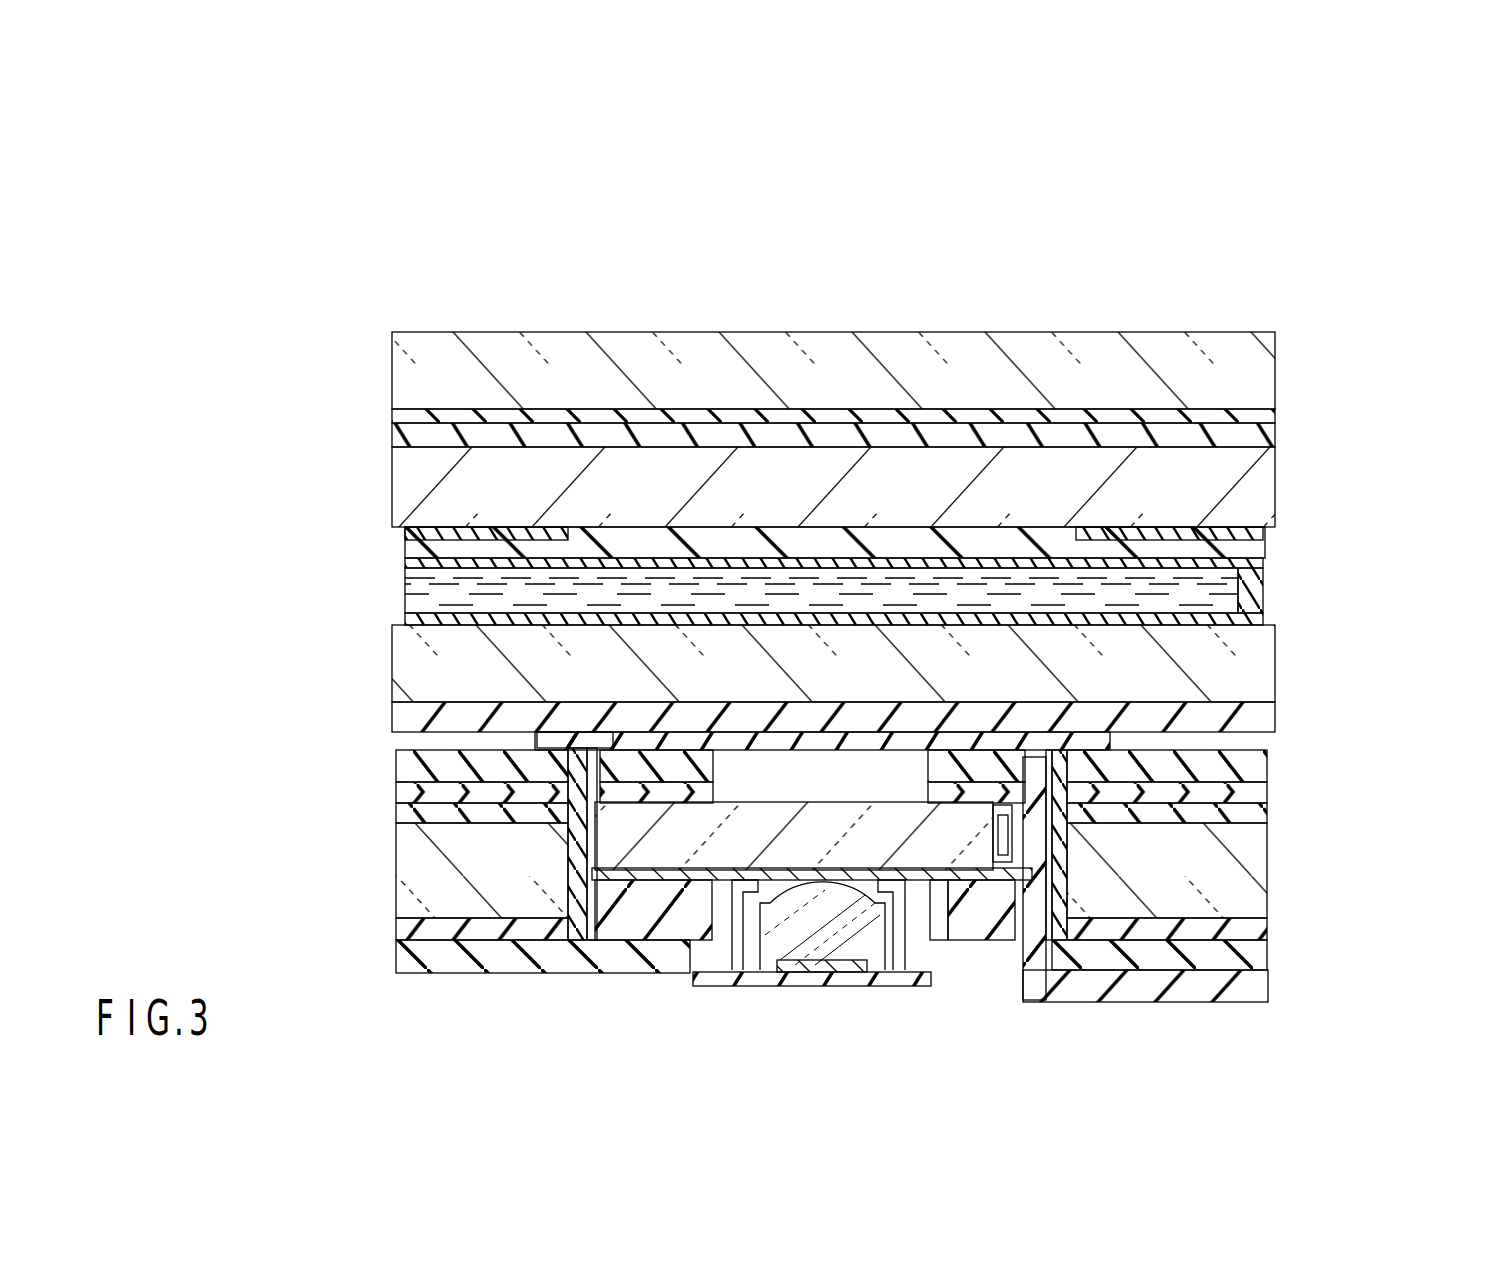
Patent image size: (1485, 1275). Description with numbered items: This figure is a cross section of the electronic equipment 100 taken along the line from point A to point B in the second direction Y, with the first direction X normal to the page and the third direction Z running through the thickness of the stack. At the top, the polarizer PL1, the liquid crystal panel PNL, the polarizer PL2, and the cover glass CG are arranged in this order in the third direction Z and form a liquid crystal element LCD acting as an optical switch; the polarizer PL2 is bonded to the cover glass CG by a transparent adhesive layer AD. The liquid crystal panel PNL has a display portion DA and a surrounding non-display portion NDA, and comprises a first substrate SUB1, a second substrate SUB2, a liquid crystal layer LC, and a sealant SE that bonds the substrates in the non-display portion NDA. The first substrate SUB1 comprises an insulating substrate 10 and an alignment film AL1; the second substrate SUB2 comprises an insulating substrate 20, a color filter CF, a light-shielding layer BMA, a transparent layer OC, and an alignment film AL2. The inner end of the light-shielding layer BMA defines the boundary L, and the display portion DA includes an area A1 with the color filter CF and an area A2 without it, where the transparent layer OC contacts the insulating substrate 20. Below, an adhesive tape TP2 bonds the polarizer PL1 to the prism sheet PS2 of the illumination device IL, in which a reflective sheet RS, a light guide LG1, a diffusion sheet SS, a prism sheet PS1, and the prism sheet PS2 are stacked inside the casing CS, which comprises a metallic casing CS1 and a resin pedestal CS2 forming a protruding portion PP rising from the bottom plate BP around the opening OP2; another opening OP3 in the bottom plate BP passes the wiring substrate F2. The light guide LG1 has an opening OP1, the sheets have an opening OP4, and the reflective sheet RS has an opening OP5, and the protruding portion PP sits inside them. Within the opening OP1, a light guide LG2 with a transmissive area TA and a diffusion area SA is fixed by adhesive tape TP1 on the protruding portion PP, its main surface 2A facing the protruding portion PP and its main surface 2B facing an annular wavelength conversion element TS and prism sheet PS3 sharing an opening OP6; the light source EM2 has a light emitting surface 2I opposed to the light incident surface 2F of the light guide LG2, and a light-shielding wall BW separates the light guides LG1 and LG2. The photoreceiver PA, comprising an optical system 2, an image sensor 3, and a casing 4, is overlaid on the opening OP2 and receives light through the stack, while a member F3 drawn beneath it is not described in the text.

The electronic equipment 100 is at (1332, 292).
The liquid crystal element LCD is at (366, 486).
The cover glass CG is at (1262, 368).
The transparent adhesive layer AD is at (1262, 416).
The polarizer PL2 is at (1262, 436).
The insulating substrate 20 is at (1258, 482).
The color filter CF is at (1185, 532).
The light-shielding layer BMA is at (1262, 534).
The transparent layer OC is at (1256, 550).
The alignment film AL2 is at (1262, 564).
The liquid crystal layer LC is at (1222, 594).
The sealant SE is at (1252, 610).
The alignment film AL1 is at (1258, 620).
The insulating substrate 10 is at (1258, 680).
The polarizer PL1 is at (1258, 717).
The adhesive tape TP2 is at (1110, 740).
The prism sheet PS2 is at (1262, 770).
The prism sheet PS1 is at (1262, 792).
The diffusion sheet SS is at (1262, 815).
The light guide LG1 is at (1260, 880).
The reflective sheet RS is at (1260, 930).
The casing CS is at (1260, 955).
The second substrate SUB2 is at (1376, 472).
The liquid crystal panel PNL is at (1376, 548).
The first substrate SUB1 is at (1376, 668).
The illumination device IL is at (1380, 846).
The display portion DA is at (388, 335).
The non-display portion NDA is at (1283, 247).
The area A1 is at (568, 297).
The area A2 is at (1076, 525).
The boundary L is at (1223, 545).
The opening OP1 is at (600, 850).
The opening OP2 is at (721, 928).
The opening OP3 is at (1058, 948).
The opening OP4 is at (596, 772).
The opening OP5 is at (592, 938).
The opening OP6 is at (930, 770).
The prism sheet PS3 is at (640, 742).
The wavelength conversion element TS is at (698, 800).
The light source EM2 is at (1003, 756).
The diffusion area SA is at (708, 788).
The transmissive area TA is at (790, 800).
The optical system 2 is at (812, 942).
The main surface 2A is at (803, 888).
The main surface 2B is at (830, 800).
The light emitting surface 2I is at (990, 832).
The light incident surface 2F is at (1006, 850).
The image sensor 3 is at (832, 972).
The casing 4 is at (892, 945).
The protruding portion PP is at (686, 925).
The photoreceiver PA is at (908, 933).
The metallic casing CS1 is at (938, 945).
The pedestal CS2 is at (956, 975).
The adhesive tape TP1 is at (1037, 968).
The light-shielding wall BW is at (1062, 972).
The wiring substrate F2 is at (1150, 992).
The third frame F3 is at (750, 982).
The bottom plate BP is at (455, 962).
The light guide LG2 is at (576, 926).
The point A of line A-B A is at (397, 995).
The point B of line A- B is at (1263, 1022).
The first direction X is at (271, 1060).
The second direction Y is at (283, 1048).
The third direction Z is at (283, 1048).